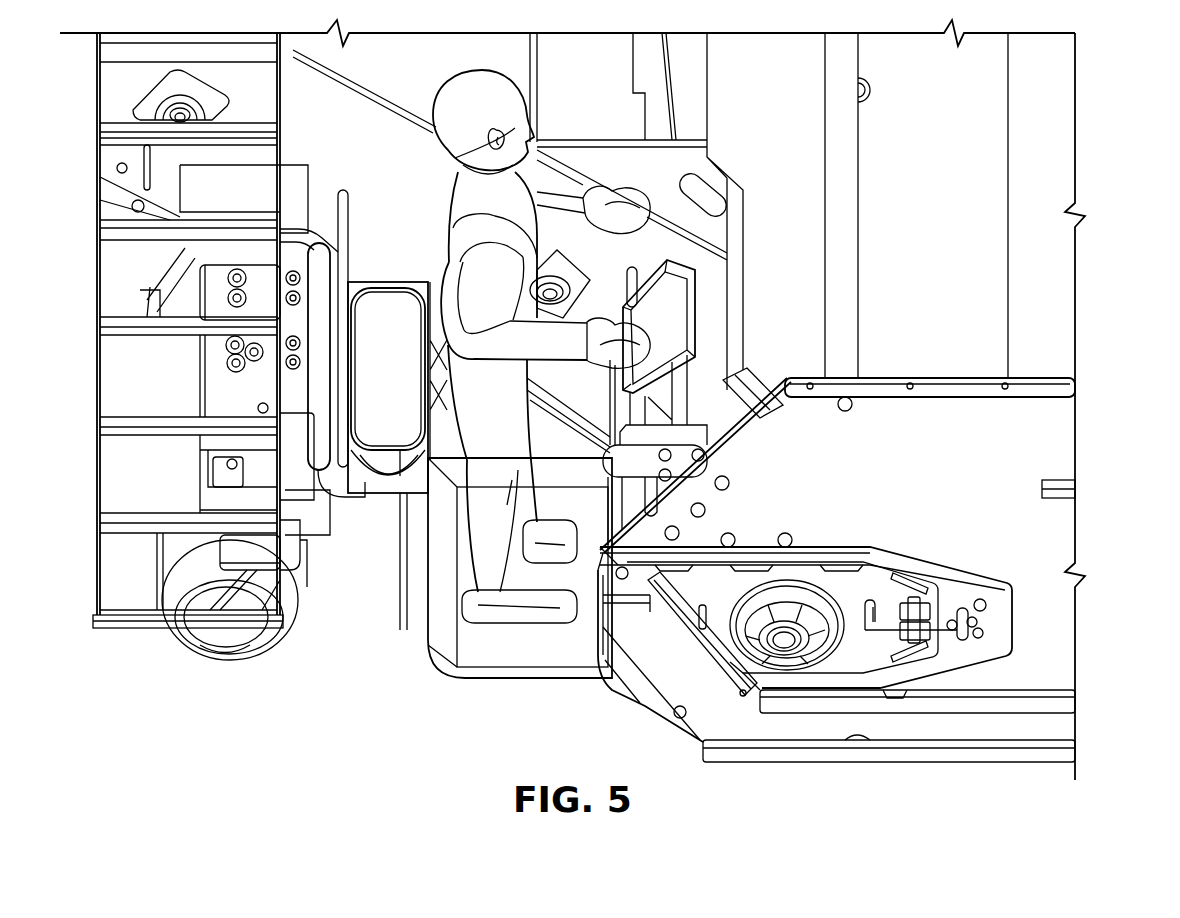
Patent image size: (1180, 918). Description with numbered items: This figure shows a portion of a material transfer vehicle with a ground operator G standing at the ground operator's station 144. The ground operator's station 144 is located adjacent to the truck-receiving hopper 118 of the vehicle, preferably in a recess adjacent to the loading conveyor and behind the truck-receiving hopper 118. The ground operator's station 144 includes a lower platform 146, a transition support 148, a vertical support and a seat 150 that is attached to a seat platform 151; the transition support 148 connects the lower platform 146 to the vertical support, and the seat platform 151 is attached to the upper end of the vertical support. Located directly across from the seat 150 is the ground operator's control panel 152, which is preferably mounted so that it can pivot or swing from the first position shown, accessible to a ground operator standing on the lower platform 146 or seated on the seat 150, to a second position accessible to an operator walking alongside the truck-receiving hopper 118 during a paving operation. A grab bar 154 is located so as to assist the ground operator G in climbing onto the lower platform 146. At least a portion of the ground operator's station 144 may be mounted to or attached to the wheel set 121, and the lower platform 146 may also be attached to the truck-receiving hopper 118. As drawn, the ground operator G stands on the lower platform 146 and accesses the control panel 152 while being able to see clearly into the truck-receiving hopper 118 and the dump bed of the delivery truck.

The truck-receiving hopper 118 is at (1045, 460).
The wheel set 121 is at (220, 667).
The ground operator's station 144 is at (467, 621).
The lower platform 146 is at (533, 648).
The transition support 148 is at (445, 628).
The seat 150 is at (405, 440).
The seat platform 151 is at (389, 388).
The ground operator's control panel 152 is at (693, 300).
The grab bar 154 is at (320, 268).
The ground operator G is at (467, 94).